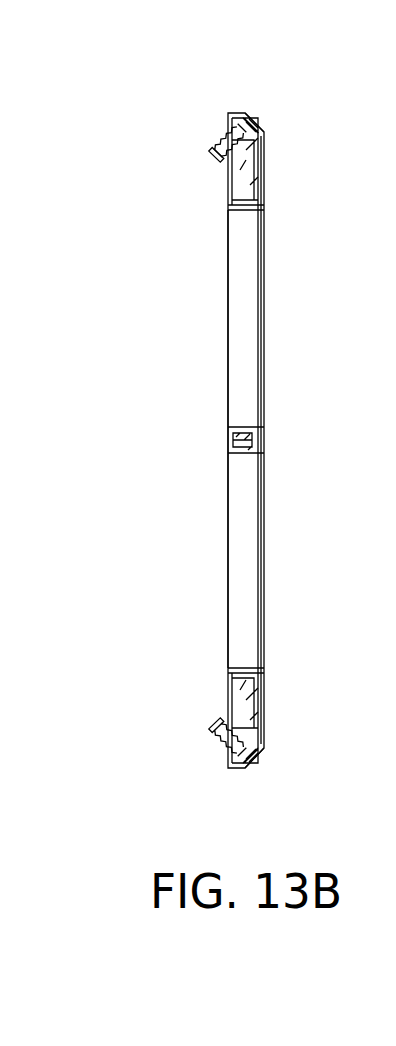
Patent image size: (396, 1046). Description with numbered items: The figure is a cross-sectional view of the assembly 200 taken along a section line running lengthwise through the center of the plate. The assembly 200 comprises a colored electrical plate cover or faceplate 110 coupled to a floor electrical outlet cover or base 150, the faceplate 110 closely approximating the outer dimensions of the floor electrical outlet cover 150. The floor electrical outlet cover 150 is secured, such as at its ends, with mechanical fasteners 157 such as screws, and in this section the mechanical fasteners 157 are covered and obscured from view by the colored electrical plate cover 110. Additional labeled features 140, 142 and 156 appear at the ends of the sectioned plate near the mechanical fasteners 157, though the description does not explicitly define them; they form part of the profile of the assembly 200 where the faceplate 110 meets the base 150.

The assembly 200 is at (140, 78).
The colored electrical plate cover 110 is at (258, 327).
The floor electrical outlet cover 150 is at (242, 337).
The clip 140 is at (243, 110).
The chamfered edge 142 is at (284, 103).
The fastener 156 is at (226, 112).
The mechanical fasteners 157 is at (222, 141).